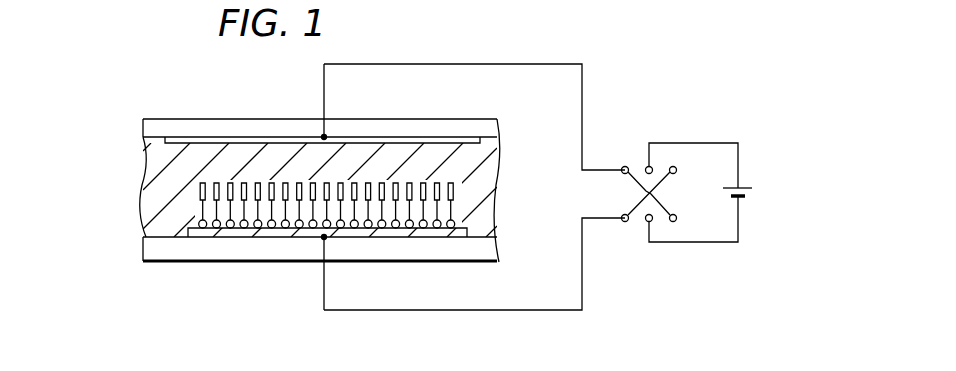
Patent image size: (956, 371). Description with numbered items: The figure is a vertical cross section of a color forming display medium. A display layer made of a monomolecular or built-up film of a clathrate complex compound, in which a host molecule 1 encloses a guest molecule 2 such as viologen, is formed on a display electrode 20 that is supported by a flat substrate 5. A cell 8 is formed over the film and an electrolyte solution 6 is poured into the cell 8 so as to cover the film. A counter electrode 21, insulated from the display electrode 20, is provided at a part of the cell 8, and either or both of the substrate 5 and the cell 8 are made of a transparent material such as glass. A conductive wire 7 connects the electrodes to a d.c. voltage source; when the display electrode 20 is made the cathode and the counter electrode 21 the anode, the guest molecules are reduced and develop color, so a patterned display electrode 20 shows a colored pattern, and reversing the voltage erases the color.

The host molecule 1 is at (200, 208).
The guest molecule 2 is at (200, 183).
The substrate 5 is at (211, 250).
The electrolyte solution 6 is at (276, 150).
The conductive wire 7 is at (546, 310).
The cell 8 is at (434, 130).
The display electrode 20 is at (277, 230).
The counter electrode 21 is at (199, 143).